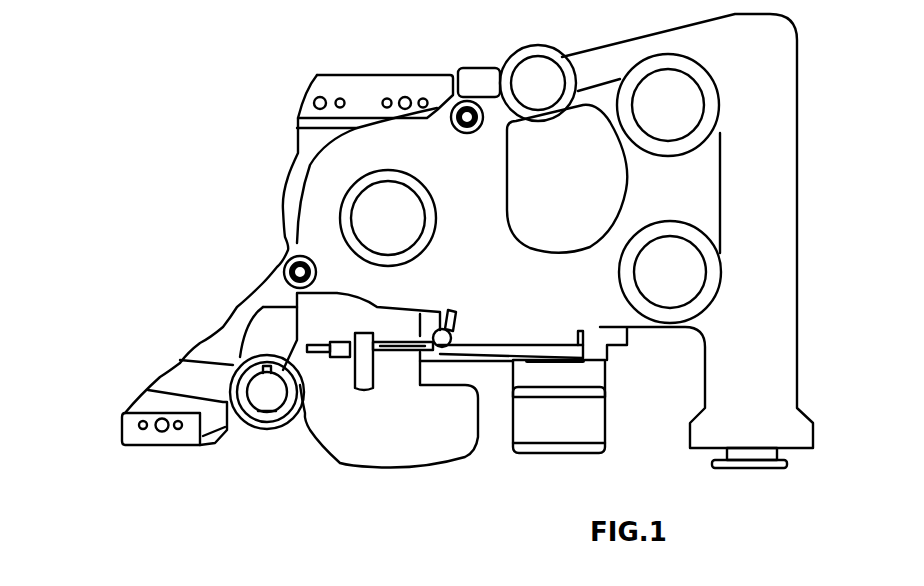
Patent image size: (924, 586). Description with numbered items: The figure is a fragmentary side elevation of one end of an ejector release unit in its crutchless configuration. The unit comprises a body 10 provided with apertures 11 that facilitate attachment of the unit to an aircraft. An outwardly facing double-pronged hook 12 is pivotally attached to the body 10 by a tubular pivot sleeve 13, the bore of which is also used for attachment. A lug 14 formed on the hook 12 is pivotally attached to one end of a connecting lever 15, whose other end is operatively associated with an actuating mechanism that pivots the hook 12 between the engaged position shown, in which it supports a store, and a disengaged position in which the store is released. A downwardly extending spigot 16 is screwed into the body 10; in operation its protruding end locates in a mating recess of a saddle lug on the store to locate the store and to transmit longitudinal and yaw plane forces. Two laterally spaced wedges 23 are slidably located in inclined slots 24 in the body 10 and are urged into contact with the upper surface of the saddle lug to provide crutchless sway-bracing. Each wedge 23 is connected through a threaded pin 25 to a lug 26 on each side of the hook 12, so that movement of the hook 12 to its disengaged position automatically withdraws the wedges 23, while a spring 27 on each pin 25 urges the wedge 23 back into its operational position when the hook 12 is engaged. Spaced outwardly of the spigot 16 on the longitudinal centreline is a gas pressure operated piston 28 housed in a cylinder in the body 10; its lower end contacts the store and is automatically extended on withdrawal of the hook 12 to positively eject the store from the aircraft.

The body 10 is at (480, 163).
The apertures 11 is at (705, 103).
The double-pronged hook 12 is at (453, 442).
The tubular pivot sleeve 13 is at (383, 180).
The lug 14 is at (298, 420).
The connecting lever 15 is at (195, 372).
The spigot 16 is at (580, 422).
The wedges 23 is at (497, 352).
The inclined slots 24 is at (453, 312).
The threaded pin 25 is at (407, 342).
The lug 26 is at (365, 370).
The spring 27 is at (393, 353).
The gas pressure operated piston 28 is at (758, 457).